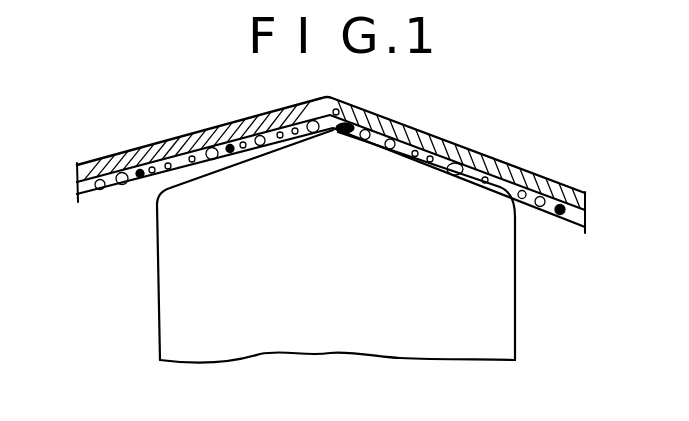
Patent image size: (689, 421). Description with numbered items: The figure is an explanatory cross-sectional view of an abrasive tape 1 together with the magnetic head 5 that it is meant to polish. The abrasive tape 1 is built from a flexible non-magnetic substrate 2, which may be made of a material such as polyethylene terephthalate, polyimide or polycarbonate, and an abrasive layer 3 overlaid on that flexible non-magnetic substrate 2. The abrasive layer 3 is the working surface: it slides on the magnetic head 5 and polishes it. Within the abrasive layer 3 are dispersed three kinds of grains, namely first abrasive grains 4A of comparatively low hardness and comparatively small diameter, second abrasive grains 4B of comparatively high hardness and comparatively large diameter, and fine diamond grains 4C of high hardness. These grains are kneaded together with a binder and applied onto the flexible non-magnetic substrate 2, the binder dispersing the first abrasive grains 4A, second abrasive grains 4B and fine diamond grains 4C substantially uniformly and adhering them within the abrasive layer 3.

The abrasive tape 1 is at (310, 183).
The flexible non-magnetic substrate 2 is at (98, 161).
The abrasive layer 3 is at (80, 187).
The first abrasive grains 4A is at (102, 192).
The second abrasive grains 4B is at (124, 186).
The fine diamond grains 4C is at (573, 245).
The magnetic head 5 is at (381, 338).